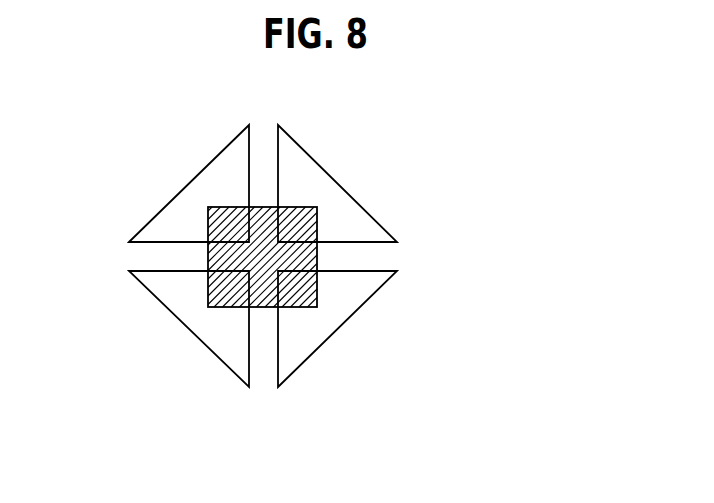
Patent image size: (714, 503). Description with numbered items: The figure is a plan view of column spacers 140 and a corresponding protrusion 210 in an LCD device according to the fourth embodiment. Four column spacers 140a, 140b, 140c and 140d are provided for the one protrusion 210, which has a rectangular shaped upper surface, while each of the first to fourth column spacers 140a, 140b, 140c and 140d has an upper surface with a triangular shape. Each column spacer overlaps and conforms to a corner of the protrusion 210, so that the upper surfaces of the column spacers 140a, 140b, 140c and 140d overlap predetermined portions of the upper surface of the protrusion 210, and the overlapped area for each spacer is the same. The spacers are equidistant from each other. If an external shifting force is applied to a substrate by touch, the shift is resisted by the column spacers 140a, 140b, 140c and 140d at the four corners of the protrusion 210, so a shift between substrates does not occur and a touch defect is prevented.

The column spacers 140 is at (386, 253).
The first column spacer 140a is at (239, 142).
The second column spacer 140b is at (310, 183).
The third column spacer 140c is at (343, 307).
The fourth column spacer 140d is at (238, 362).
The protrusion 210 is at (217, 250).